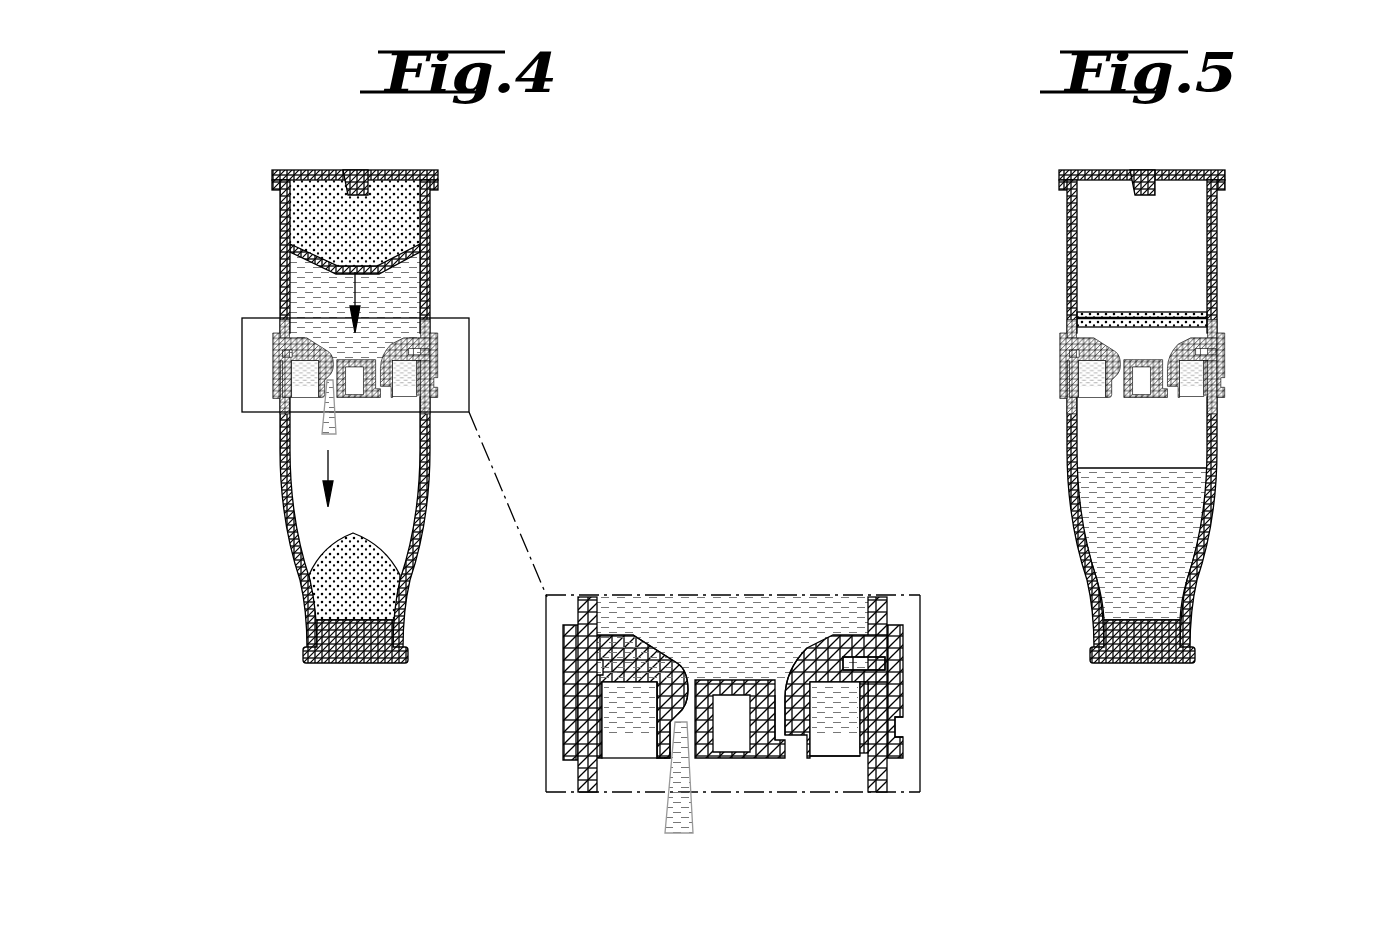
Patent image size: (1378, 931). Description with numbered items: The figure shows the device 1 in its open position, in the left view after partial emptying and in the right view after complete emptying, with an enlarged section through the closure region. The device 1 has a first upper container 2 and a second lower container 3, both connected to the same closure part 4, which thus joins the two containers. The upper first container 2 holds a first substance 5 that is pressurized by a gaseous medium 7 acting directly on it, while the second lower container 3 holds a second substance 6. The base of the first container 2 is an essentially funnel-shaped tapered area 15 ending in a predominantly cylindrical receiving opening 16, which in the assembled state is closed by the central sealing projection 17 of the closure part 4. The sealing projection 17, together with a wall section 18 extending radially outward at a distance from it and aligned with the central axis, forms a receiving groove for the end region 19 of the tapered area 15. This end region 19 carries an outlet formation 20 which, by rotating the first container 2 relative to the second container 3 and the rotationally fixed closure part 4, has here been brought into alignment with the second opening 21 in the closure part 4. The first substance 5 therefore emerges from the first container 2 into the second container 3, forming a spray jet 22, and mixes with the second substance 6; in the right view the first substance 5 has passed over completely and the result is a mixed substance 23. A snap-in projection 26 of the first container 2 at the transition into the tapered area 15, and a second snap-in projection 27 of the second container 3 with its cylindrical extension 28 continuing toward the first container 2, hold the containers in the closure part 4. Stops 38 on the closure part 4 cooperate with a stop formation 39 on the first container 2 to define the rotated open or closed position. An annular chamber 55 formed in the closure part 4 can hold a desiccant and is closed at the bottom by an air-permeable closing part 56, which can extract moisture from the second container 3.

In FIG. 4, the device 1 is at (200, 298).
In FIG. 5, the device 1 is at (1013, 298).
In FIG. 4, the first upper container 2 is at (430, 268).
In FIG. 5, the first upper container 2 is at (1217, 268).
In FIG. 4, the second lower container 3 is at (425, 481).
In FIG. 5, the second lower container 3 is at (1213, 447).
In FIG. 4, the closure part 4 is at (437, 366).
In FIG. 5, the closure part 4 is at (1224, 366).
In FIG. 4, the first substance 5 is at (355, 307).
In FIG. 4, the second substance 6 is at (354, 576).
In FIG. 4, the gaseous medium 7 is at (355, 224).
In FIG. 4, the tapered area 15 is at (787, 712).
In FIG. 4, the receiving opening 16 is at (690, 703).
In FIG. 4, the sealing projection 17 is at (770, 695).
In FIG. 4, the wall section 18 is at (683, 705).
In FIG. 4, the end region 19 is at (785, 712).
In FIG. 4, the outlet formation 20 is at (680, 727).
In FIG. 4, the second opening 21 is at (673, 758).
In FIG. 4, the spray jet 22 is at (322, 432).
In FIG. 5, the mixed substance 23 is at (1142, 544).
In FIG. 4, the snap-in projection 26 is at (887, 652).
In FIG. 4, the second snap-in projection 27 is at (890, 727).
In FIG. 4, the extension 28 is at (877, 705).
In FIG. 4, the stop 38 is at (857, 662).
In FIG. 4, the stop formation 39 is at (630, 660).
In FIG. 4, the chamber 55 is at (850, 718).
In FIG. 4, the closing part 56 is at (823, 737).